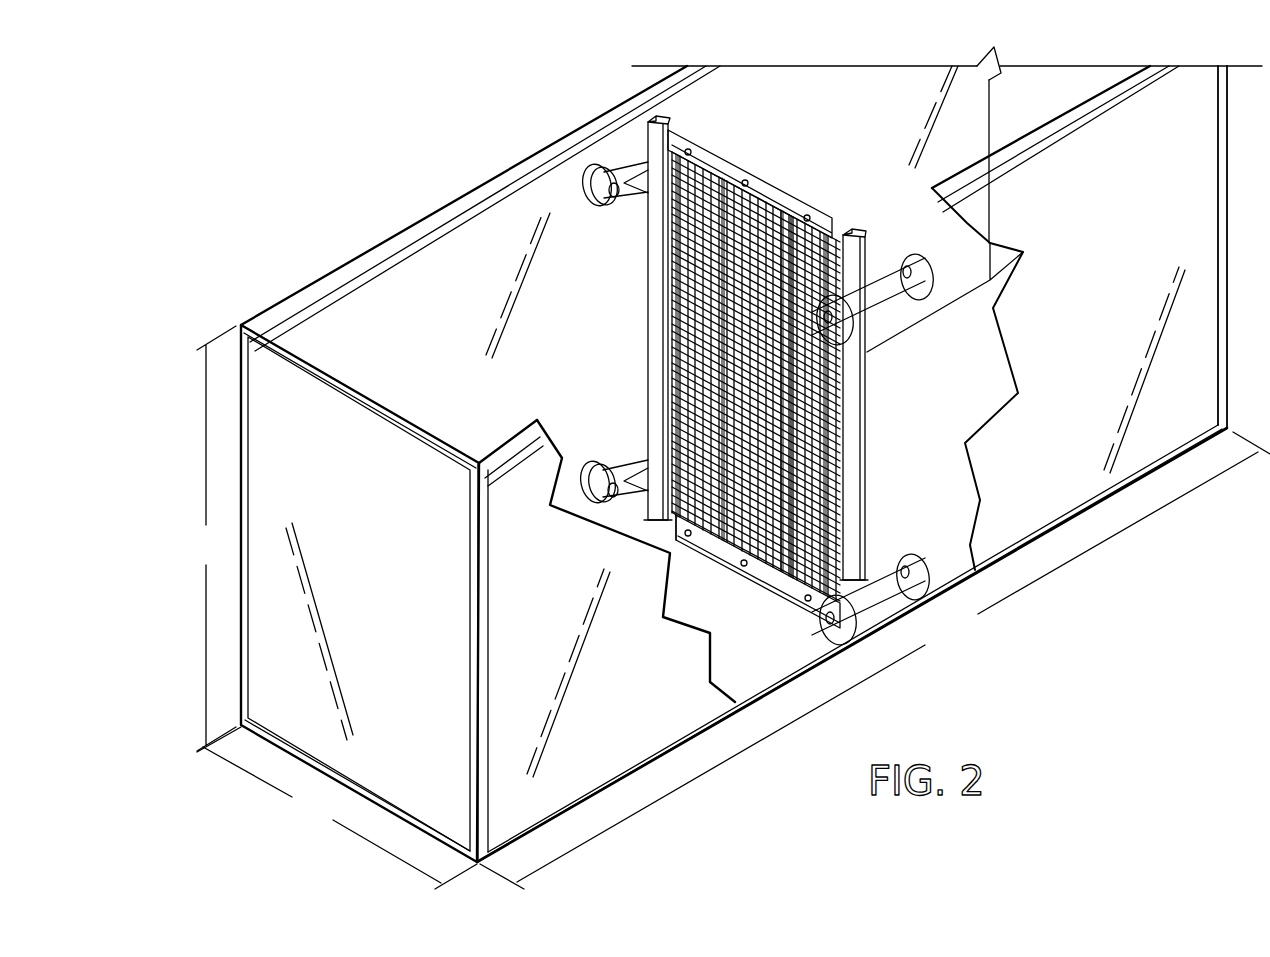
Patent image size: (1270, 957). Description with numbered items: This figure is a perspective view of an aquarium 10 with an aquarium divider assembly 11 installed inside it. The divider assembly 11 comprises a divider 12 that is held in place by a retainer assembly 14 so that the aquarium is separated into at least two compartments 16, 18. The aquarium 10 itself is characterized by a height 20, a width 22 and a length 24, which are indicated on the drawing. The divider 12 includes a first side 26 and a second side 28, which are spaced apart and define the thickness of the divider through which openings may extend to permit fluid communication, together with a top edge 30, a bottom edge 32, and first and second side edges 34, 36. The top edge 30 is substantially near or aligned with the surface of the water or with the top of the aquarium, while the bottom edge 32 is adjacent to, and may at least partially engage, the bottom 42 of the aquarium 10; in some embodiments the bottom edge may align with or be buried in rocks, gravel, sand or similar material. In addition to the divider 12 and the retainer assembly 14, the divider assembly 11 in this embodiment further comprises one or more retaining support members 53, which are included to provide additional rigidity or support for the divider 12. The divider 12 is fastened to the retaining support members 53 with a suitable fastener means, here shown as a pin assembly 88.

The aquarium 10 is at (365, 160).
The aquarium divider assembly 11 is at (886, 388).
The divider 12 is at (768, 168).
The retainer assembly 14 is at (878, 532).
The compartment 16 is at (570, 610).
The compartment 18 is at (910, 119).
The height 20 is at (214, 538).
The width 22 is at (337, 808).
The length 24 is at (875, 660).
The first side 26 is at (703, 350).
The second side 28 is at (789, 235).
The top edge 30 is at (838, 232).
The bottom edge 32 is at (670, 532).
The first side edge 34 is at (850, 397).
The second side edge 36 is at (652, 328).
The bottom of the aquarium 42 is at (766, 665).
The retaining support member 53 is at (735, 163).
The pin assembly 88 is at (737, 188).